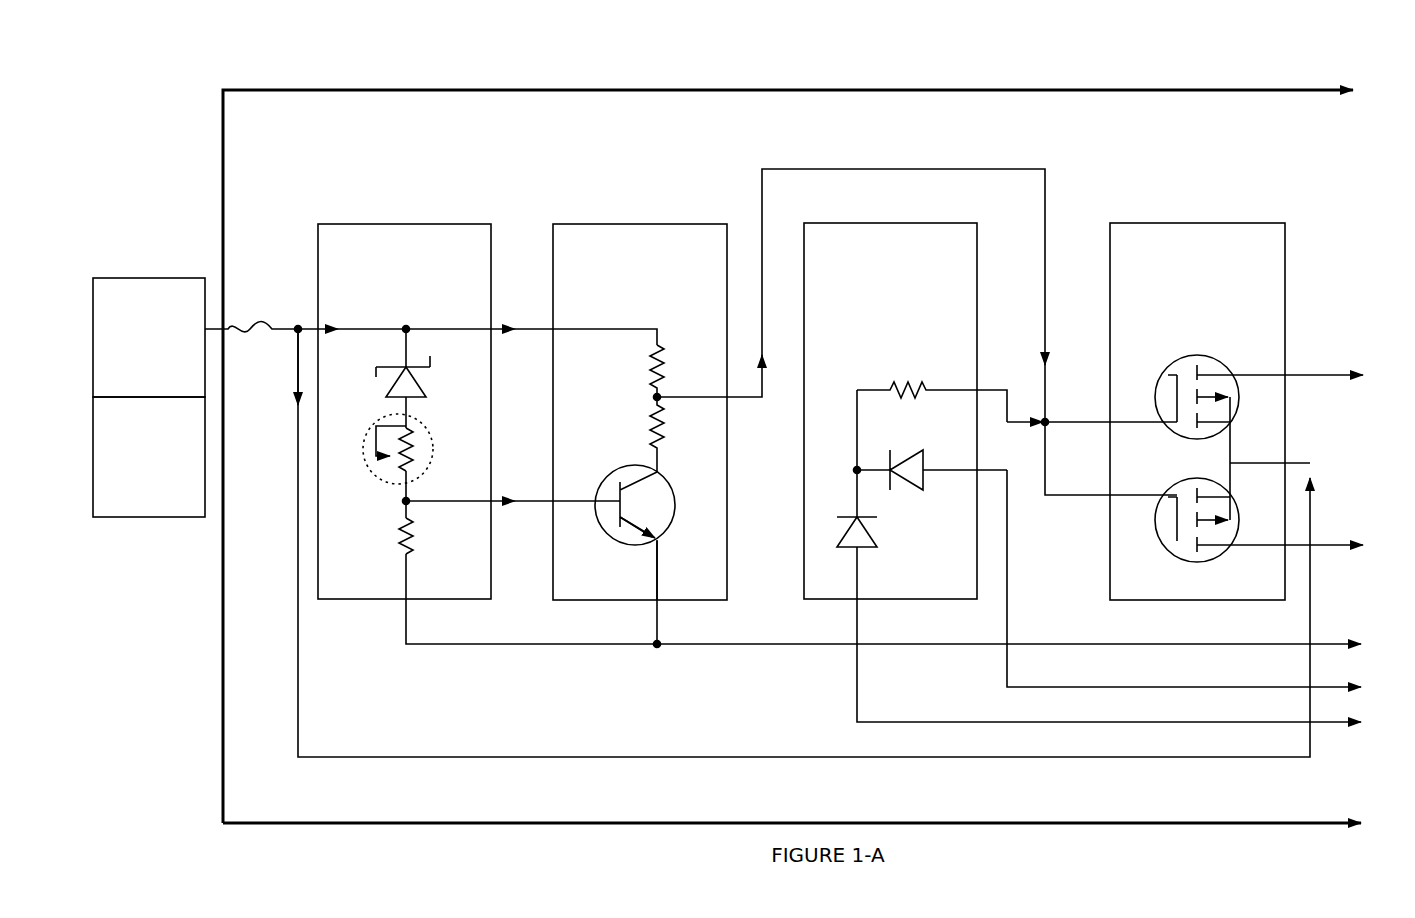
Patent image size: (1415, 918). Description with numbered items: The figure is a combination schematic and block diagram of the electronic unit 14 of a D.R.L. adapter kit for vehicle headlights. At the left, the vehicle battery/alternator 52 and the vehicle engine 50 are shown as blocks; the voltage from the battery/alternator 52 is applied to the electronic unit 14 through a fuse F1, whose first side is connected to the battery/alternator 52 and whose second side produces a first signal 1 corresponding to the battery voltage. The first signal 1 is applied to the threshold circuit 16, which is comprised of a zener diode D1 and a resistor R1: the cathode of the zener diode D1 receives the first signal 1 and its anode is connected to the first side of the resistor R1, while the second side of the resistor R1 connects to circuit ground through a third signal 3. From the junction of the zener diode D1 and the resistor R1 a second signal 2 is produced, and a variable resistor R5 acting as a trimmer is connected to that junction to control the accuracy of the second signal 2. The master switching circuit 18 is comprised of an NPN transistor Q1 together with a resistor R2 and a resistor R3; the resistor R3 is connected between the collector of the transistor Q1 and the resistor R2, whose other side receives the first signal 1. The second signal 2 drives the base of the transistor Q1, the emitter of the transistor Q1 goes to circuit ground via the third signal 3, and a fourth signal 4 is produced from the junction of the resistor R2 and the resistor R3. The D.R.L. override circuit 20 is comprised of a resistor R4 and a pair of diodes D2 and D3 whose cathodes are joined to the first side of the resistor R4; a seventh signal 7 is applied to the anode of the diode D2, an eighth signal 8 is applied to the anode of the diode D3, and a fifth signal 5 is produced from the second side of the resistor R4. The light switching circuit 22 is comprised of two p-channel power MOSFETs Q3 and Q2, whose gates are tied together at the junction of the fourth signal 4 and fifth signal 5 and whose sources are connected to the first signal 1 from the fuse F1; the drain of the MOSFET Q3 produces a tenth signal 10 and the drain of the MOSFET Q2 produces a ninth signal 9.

The electronic unit 14 is at (810, 457).
The battery/alternator 52 is at (149, 337).
The vehicle engine 50 is at (149, 457).
The fuse F1 is at (251, 317).
The first signal 1 is at (803, 527).
The second signal 2 is at (512, 487).
The third signal 3 is at (900, 598).
The fourth signal 4 is at (850, 295).
The fifth signal 5 is at (1092, 457).
The seventh signal 7 is at (1170, 571).
The eighth signal 8 is at (1125, 650).
The ninth signal 9 is at (1295, 536).
The tenth signal 10 is at (1312, 365).
The threshold circuit 16 is at (404, 411).
The master switching circuit 18 is at (640, 412).
The D.R.L. override circuit 20 is at (890, 411).
The light switching circuit 22 is at (1197, 411).
The zener diode D1 is at (417, 378).
The variable resistor R5 is at (380, 449).
The resistor R1 is at (421, 512).
The resistor R2 is at (634, 371).
The resistor R3 is at (634, 434).
The NPN transistor Q1 is at (651, 532).
The resistor R4 is at (932, 426).
The diode D2 is at (931, 480).
The diode D3 is at (873, 535).
The p-channel power MOSFET Q3 is at (1142, 437).
The p-channel power MOSFET Q2 is at (1178, 520).